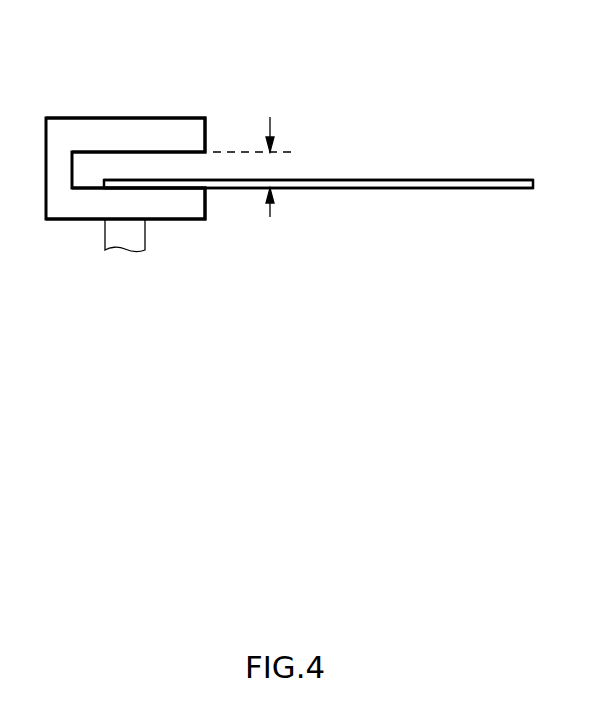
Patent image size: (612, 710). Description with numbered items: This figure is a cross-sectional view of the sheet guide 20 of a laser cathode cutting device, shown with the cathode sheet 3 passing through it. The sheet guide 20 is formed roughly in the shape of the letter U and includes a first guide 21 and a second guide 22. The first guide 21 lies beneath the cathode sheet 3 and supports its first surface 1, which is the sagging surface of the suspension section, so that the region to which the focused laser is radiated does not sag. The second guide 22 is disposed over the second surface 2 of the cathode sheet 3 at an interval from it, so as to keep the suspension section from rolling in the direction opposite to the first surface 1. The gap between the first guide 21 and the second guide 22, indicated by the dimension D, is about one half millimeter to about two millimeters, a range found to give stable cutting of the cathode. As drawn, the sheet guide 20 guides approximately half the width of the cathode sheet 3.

The sheet guide 20 is at (65, 117).
The second guide 22 is at (188, 129).
The first guide 21 is at (189, 211).
The second surface 2 is at (460, 180).
The first surface 1 is at (460, 188).
The cathode sheet 3 is at (371, 179).
The distance D is at (254, 167).